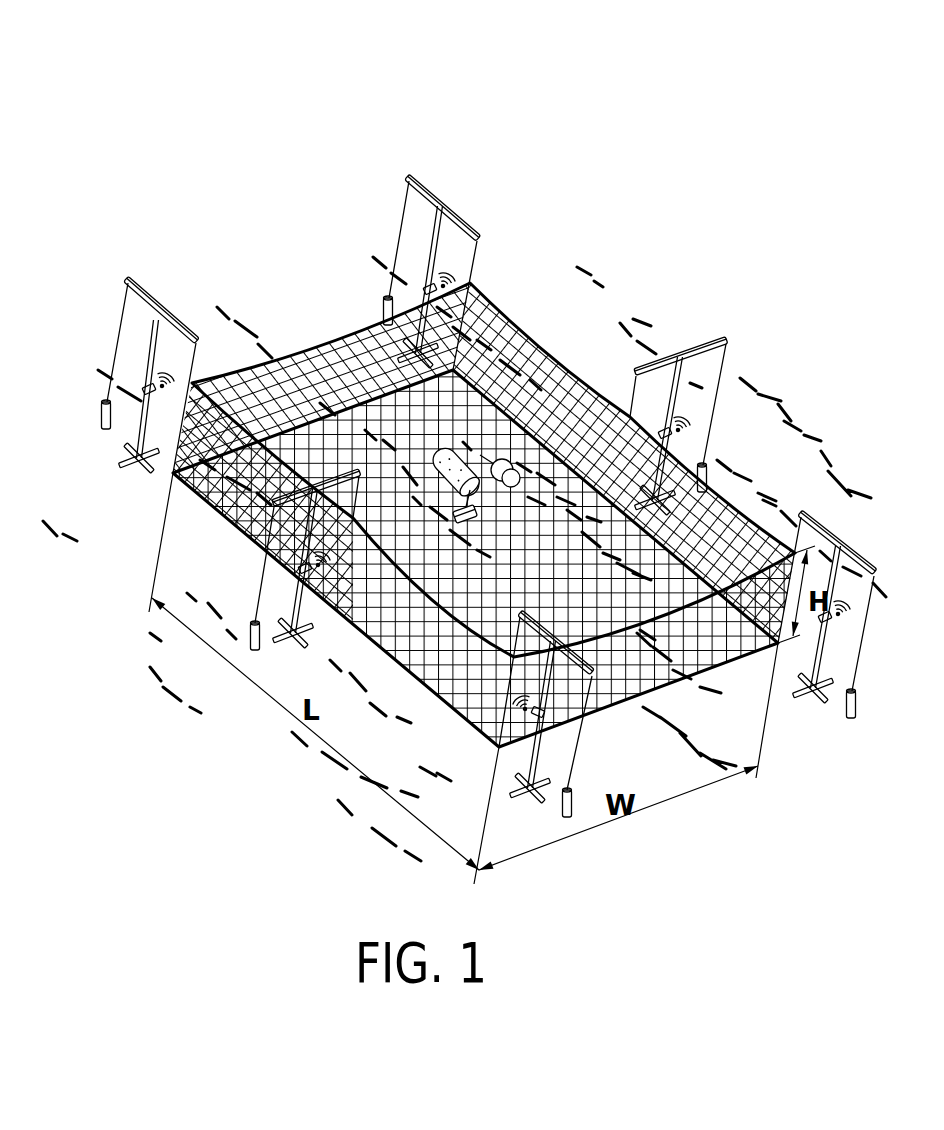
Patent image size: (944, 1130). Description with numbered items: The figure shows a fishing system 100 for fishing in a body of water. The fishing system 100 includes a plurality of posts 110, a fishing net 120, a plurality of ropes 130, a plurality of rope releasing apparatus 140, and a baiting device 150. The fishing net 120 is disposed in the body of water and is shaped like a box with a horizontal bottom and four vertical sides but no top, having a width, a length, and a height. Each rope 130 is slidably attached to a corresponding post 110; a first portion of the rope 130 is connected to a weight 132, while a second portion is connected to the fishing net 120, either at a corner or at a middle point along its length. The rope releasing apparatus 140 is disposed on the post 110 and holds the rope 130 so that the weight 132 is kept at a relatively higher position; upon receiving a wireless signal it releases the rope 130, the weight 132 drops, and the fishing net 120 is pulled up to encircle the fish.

The fishing system 100 is at (235, 98).
The post 110 is at (154, 349).
The fishing net 120 is at (489, 295).
The rope 130 is at (196, 380).
The weight 132 is at (101, 417).
The rope releasing apparatus 140 is at (155, 392).
The baiting device 150 is at (443, 450).